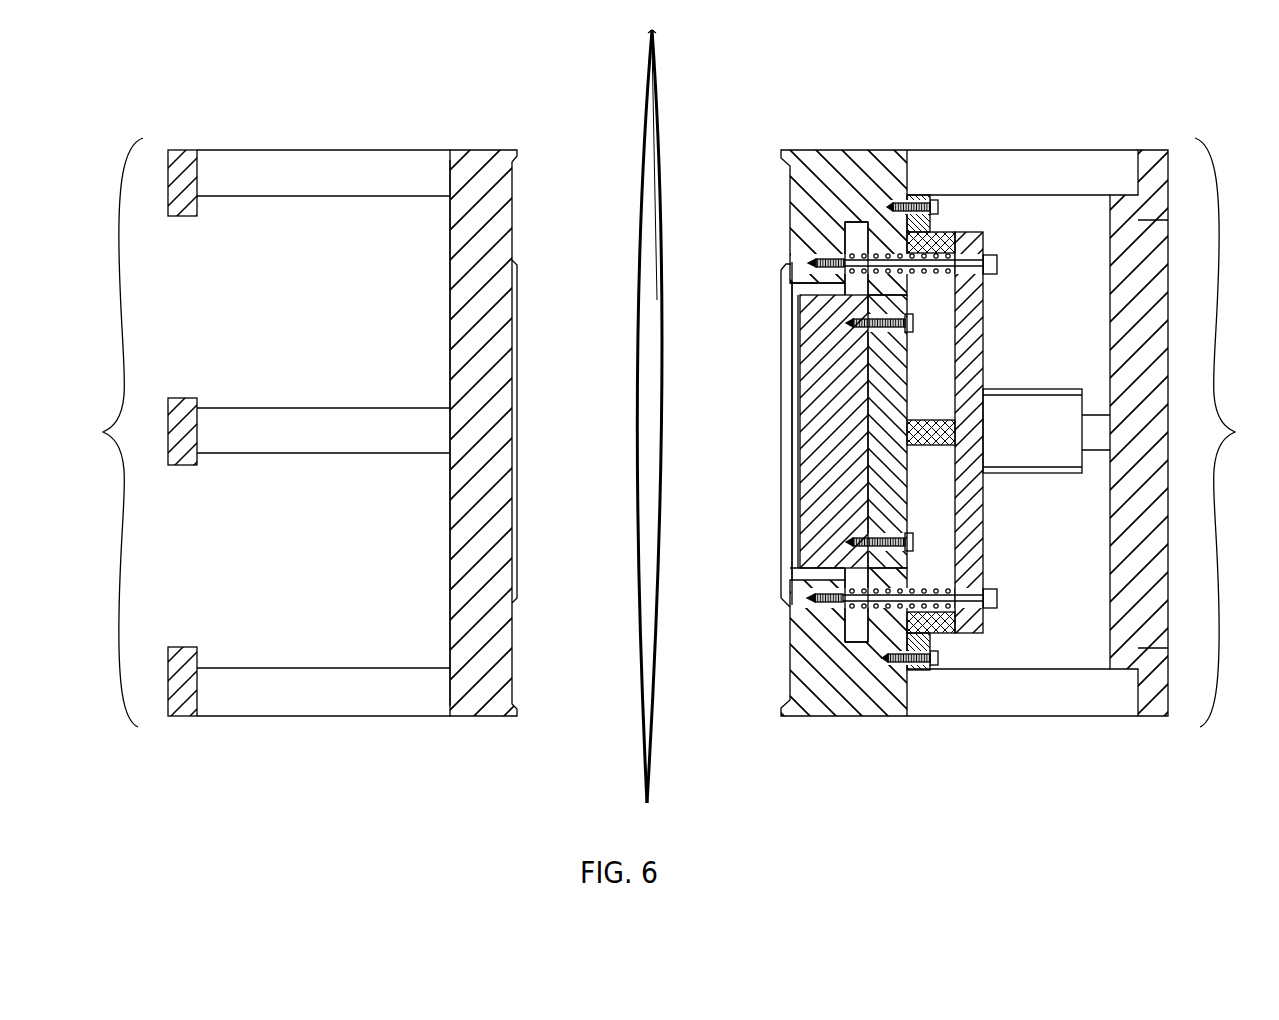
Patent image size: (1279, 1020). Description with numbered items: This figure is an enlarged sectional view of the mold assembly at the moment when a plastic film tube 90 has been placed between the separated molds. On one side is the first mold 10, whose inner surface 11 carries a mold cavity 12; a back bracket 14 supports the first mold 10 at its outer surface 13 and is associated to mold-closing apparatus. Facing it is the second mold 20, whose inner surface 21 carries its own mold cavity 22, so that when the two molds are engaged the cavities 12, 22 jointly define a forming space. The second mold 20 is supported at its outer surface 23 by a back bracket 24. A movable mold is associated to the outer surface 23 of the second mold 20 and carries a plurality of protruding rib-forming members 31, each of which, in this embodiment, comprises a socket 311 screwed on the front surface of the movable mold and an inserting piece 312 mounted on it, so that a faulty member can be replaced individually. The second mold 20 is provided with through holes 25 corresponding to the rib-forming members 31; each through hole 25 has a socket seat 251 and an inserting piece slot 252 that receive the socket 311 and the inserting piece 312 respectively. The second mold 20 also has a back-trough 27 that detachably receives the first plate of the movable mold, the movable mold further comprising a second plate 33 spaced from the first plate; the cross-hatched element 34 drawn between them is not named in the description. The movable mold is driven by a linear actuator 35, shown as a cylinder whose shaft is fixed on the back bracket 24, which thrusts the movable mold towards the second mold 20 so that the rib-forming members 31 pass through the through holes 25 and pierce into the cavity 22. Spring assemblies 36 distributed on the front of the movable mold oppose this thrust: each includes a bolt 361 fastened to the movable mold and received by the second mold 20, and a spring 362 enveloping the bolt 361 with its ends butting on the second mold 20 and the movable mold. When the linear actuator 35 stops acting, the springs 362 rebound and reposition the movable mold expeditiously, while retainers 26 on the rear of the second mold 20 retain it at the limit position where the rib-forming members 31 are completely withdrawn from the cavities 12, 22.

The first mold 10 is at (364, 403).
The inner surface 11 is at (512, 220).
The mold cavity 12 is at (517, 418).
The outer surface 13 is at (450, 262).
The back bracket 14 is at (110, 432).
The plastic film tube 90 is at (642, 125).
The second mold 20 is at (998, 414).
The inner surface 21 is at (790, 207).
The mold cavity 22 is at (781, 418).
The outer surface 23 is at (912, 197).
The back bracket 24 is at (1184, 432).
The through hole 25 is at (768, 433).
The socket seat 251 is at (793, 320).
The inserting piece slot 252 is at (810, 284).
The retainer 26 is at (922, 200).
The back-trough 27 is at (858, 228).
The rib-forming member 31 is at (780, 431).
The socket 311 is at (845, 484).
The inserting piece 312 is at (798, 521).
The second plate 33 is at (983, 236).
The cushion 34 is at (947, 233).
The linear actuator 35 is at (1043, 389).
The spring assembly 36 is at (956, 437).
The bolt 361 is at (997, 265).
The spring 362 is at (945, 275).